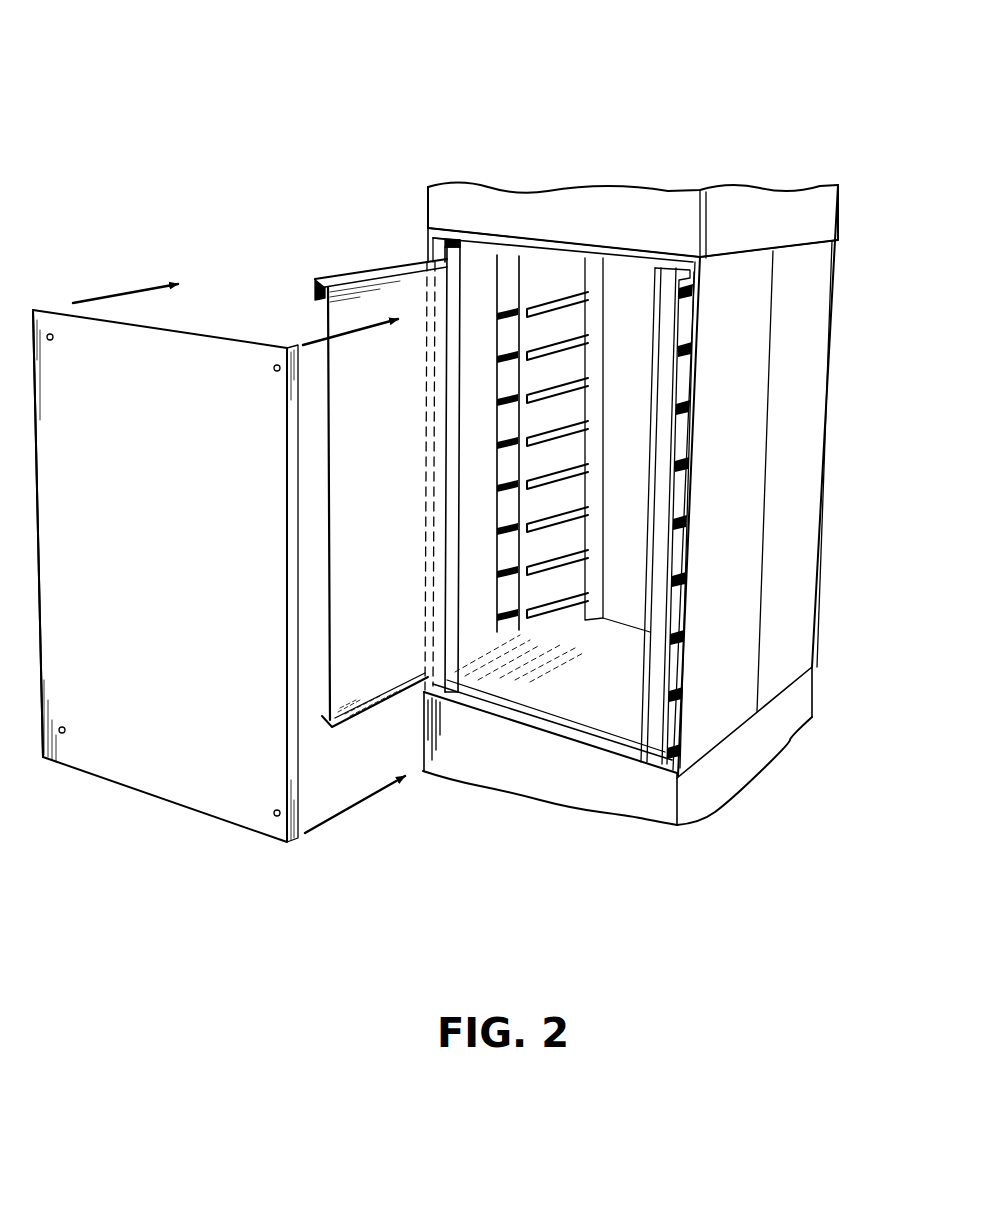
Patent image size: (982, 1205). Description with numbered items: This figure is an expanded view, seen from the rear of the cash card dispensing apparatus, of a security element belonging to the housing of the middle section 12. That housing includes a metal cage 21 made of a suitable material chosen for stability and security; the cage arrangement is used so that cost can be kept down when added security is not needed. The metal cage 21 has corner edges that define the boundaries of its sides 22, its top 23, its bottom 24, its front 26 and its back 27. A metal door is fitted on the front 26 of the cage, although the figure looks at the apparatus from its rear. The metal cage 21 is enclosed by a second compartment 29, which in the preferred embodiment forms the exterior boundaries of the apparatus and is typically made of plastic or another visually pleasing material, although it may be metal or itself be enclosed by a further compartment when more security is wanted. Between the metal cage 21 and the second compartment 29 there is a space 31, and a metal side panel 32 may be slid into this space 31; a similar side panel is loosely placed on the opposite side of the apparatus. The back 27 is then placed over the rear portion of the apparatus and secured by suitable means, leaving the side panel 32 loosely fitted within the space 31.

The middle section 12 is at (788, 668).
The metal cage 21 is at (450, 240).
The sides 22 is at (448, 298).
The top 23 is at (617, 252).
The bottom 24 is at (588, 713).
The front 26 is at (556, 180).
The back 27 is at (193, 793).
The second compartment 29 is at (810, 288).
The space 31 is at (443, 250).
The metal side panel 32 is at (342, 277).